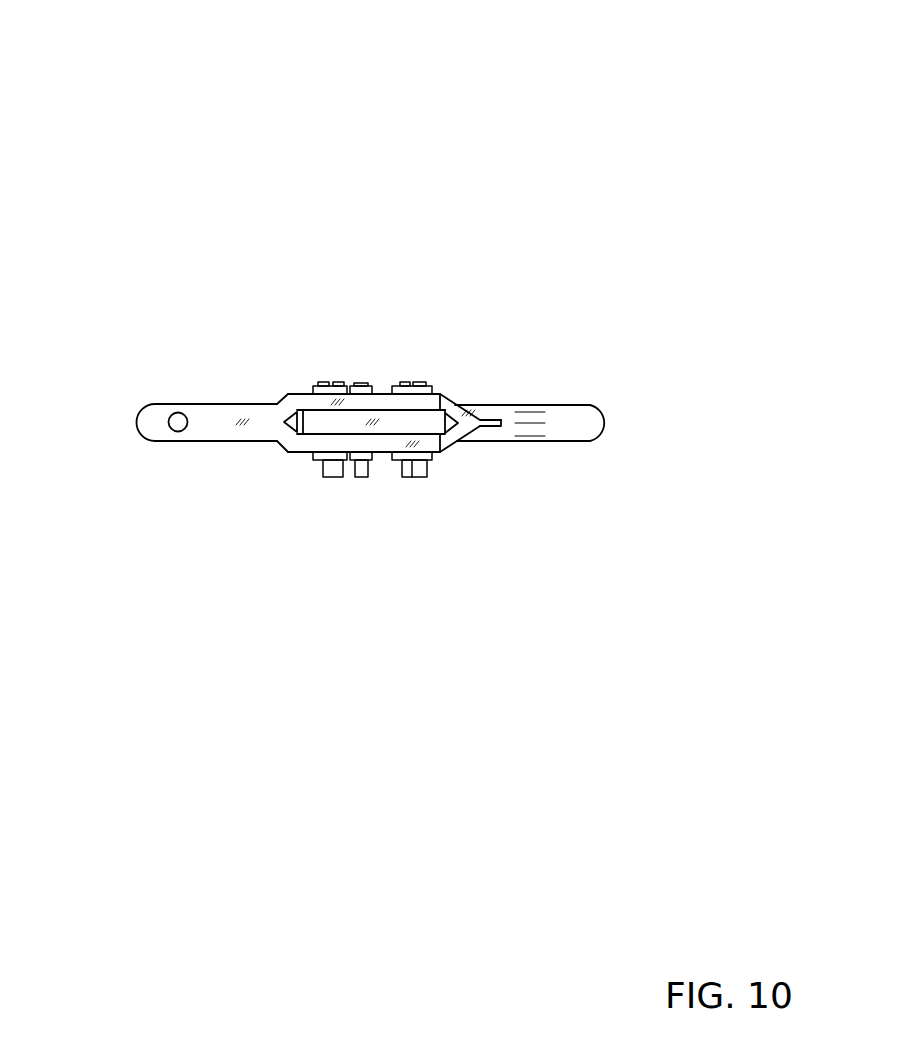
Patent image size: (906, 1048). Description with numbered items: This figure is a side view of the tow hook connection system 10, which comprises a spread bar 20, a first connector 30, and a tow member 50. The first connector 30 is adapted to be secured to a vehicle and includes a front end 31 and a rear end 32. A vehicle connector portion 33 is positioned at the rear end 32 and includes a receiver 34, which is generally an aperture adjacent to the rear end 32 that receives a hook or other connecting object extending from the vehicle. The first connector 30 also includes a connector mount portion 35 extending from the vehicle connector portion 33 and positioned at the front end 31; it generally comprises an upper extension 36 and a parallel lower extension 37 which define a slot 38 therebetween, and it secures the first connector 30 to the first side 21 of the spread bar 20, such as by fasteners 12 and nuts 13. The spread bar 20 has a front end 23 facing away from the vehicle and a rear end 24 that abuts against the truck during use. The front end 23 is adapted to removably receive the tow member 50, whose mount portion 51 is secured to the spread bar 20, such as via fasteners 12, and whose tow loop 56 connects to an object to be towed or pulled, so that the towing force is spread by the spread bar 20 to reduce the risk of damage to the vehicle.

The tow hook connection system 10 is at (603, 126).
The first connector 30 is at (196, 397).
The rear end 32 is at (132, 423).
The vehicle connector portion 33 is at (225, 403).
The receiver 34 is at (172, 432).
The rear end 24 is at (315, 403).
The spread bar 20 is at (334, 437).
The first side 21 is at (388, 430).
The slot 38 is at (288, 443).
The connector mount portion 35 is at (312, 388).
The upper extension 36 is at (380, 403).
The fasteners 12 is at (393, 385).
The lower extension 37 is at (297, 452).
The nuts 13 is at (403, 457).
The tow member 50 is at (579, 396).
The front end 31 is at (455, 403).
The front end 23 is at (462, 440).
The mount portion 51 is at (452, 443).
The tow loop 56 is at (608, 426).